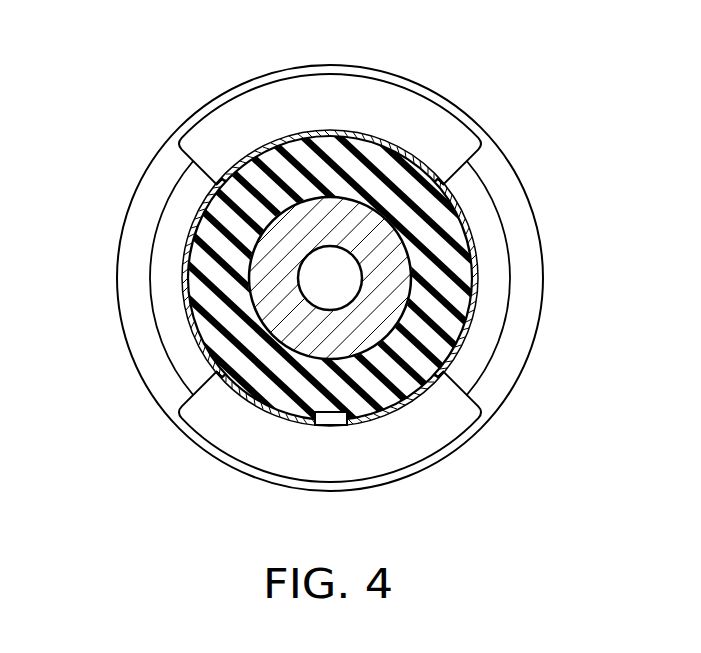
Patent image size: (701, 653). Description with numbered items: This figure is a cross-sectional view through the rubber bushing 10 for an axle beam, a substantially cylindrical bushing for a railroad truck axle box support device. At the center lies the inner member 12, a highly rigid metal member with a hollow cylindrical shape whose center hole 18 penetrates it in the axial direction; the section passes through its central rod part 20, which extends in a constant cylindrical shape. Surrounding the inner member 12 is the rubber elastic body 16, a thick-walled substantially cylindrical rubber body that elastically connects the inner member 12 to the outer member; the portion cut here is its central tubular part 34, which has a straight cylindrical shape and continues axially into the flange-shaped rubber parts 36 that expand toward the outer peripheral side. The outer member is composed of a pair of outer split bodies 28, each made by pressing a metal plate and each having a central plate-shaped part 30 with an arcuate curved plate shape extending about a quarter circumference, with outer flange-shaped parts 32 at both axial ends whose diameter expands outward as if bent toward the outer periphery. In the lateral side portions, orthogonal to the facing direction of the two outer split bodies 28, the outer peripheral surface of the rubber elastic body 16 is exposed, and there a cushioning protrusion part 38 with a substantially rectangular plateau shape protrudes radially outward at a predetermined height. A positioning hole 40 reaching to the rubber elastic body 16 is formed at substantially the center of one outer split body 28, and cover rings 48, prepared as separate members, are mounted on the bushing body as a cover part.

The rubber bushing 10 is at (503, 64).
The inner member 12 is at (292, 278).
The rubber elastic body 16 is at (194, 228).
The center hole 18 is at (360, 268).
The central rod part 20 is at (318, 331).
The outer split body 28 is at (247, 90).
The central plate-shaped part 30 is at (352, 133).
The outer flange-shaped part 32 is at (292, 97).
The central tubular part 34 is at (395, 163).
The flange-shaped rubber part 36 is at (483, 296).
The cushioning protrusion part 38 is at (463, 237).
The positioning hole 40 is at (327, 418).
The cover ring 48 is at (513, 187).